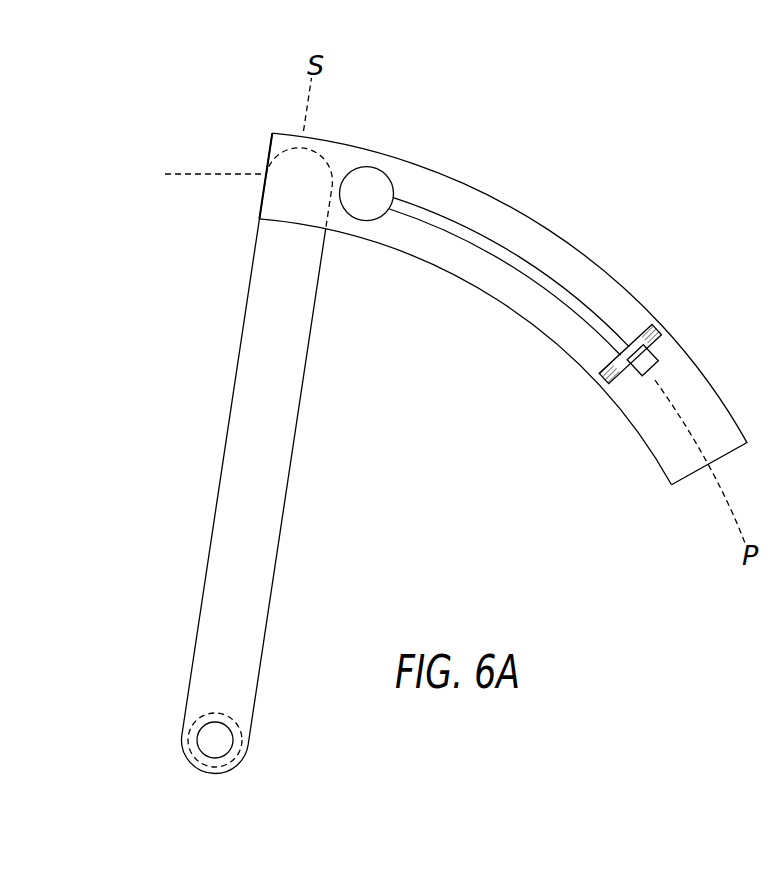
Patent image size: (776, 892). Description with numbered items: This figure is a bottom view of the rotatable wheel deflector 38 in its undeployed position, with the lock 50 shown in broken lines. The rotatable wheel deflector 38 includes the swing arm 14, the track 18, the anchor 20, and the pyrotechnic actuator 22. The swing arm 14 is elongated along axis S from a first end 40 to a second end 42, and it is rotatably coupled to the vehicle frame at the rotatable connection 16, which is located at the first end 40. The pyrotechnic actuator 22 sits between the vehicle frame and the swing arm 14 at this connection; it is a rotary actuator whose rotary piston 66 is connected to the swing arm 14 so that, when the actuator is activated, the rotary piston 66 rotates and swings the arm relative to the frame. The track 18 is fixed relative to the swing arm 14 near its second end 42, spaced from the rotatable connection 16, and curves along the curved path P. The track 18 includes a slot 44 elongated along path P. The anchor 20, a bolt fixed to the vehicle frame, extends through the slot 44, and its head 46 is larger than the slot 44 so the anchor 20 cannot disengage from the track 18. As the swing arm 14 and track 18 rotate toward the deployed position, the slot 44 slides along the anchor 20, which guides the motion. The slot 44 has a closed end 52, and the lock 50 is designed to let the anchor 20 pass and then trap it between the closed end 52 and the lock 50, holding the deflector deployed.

The swing arm 14 is at (237, 375).
The rotatable connection 16 is at (180, 763).
The track 18 is at (510, 205).
The anchor 20 is at (400, 183).
The pyrotechnic actuator 22 is at (177, 732).
The rotatable wheel deflector 38 is at (466, 287).
The first end 40 is at (255, 760).
The second end 42 is at (260, 148).
The slot 44 is at (523, 255).
The head 46 is at (375, 168).
The lock 50 is at (603, 358).
The closed end 52 is at (649, 380).
The rotary piston 66 is at (217, 742).